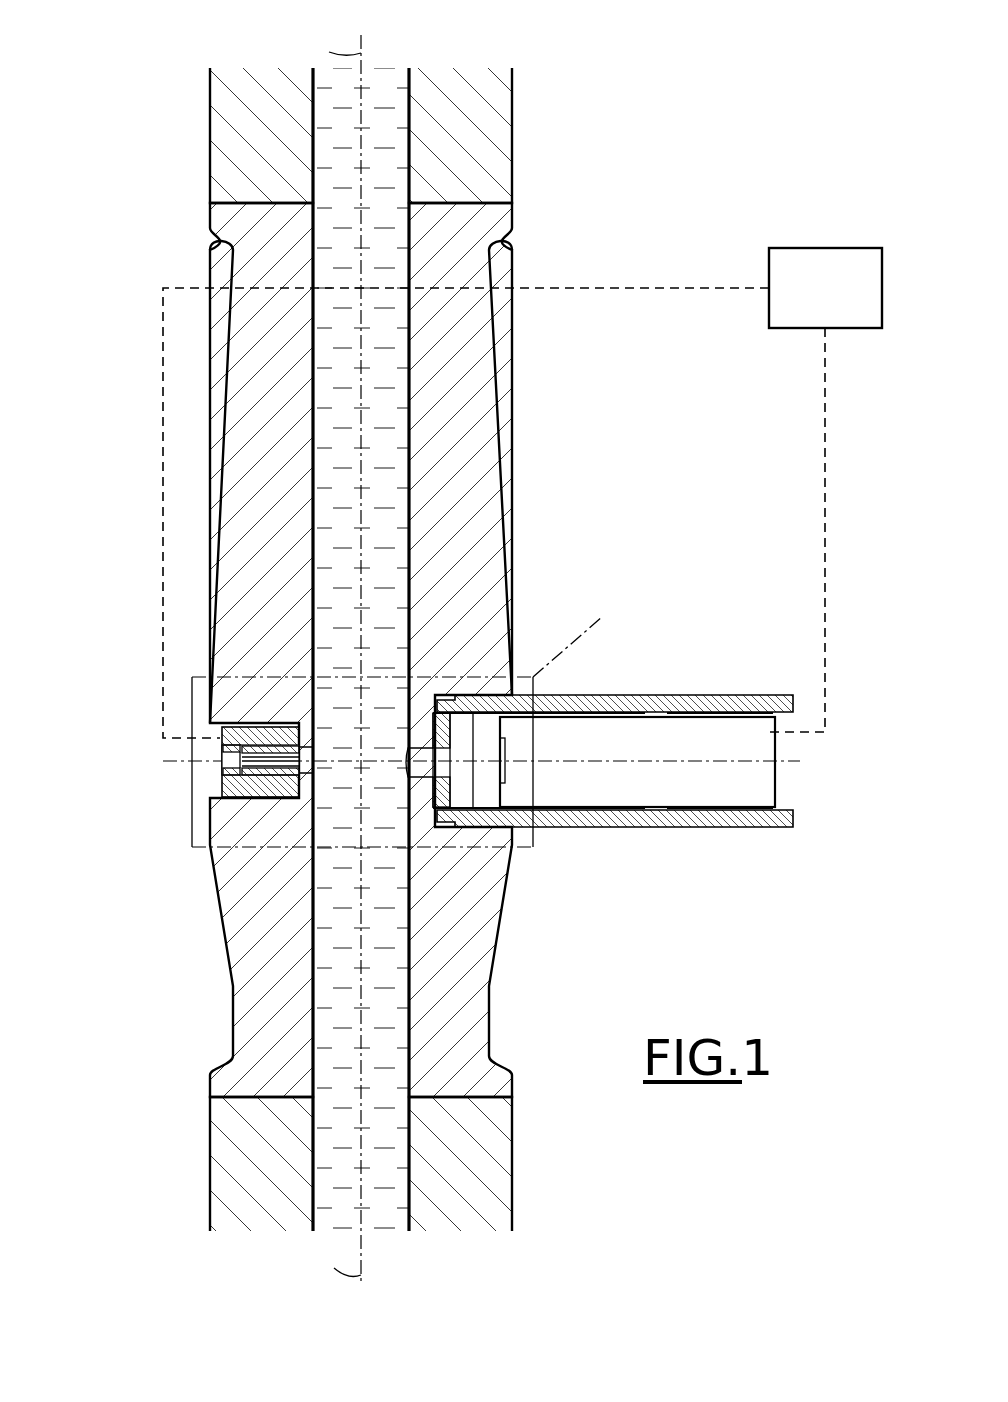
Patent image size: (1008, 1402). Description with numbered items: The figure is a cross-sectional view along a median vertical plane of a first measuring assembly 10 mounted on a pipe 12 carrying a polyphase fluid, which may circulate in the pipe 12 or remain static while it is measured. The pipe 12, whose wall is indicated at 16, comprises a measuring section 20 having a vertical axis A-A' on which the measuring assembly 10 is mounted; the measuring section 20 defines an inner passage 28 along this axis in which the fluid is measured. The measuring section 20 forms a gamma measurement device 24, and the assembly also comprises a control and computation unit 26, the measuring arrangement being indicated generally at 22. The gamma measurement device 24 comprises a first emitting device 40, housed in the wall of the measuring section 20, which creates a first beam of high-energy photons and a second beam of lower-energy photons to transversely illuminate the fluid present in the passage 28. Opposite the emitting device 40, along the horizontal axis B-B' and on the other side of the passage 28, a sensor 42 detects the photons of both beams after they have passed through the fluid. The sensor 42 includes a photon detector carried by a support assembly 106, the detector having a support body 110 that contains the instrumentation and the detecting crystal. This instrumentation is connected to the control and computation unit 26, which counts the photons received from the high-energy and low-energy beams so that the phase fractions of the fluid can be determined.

The measuring assembly 10 is at (138, 98).
The pipe 12 is at (540, 125).
The pipe wall 16 is at (223, 155).
The measuring section 20 is at (212, 503).
The measuring arrangement 22 is at (641, 325).
The gamma measurement device 24 is at (161, 785).
The control and computation unit 26 is at (825, 288).
The inner passage 28 is at (347, 345).
The first emitting device 40 is at (209, 784).
The sensor 42 is at (646, 842).
The support assembly 106 is at (697, 695).
The support body 110 is at (763, 790).